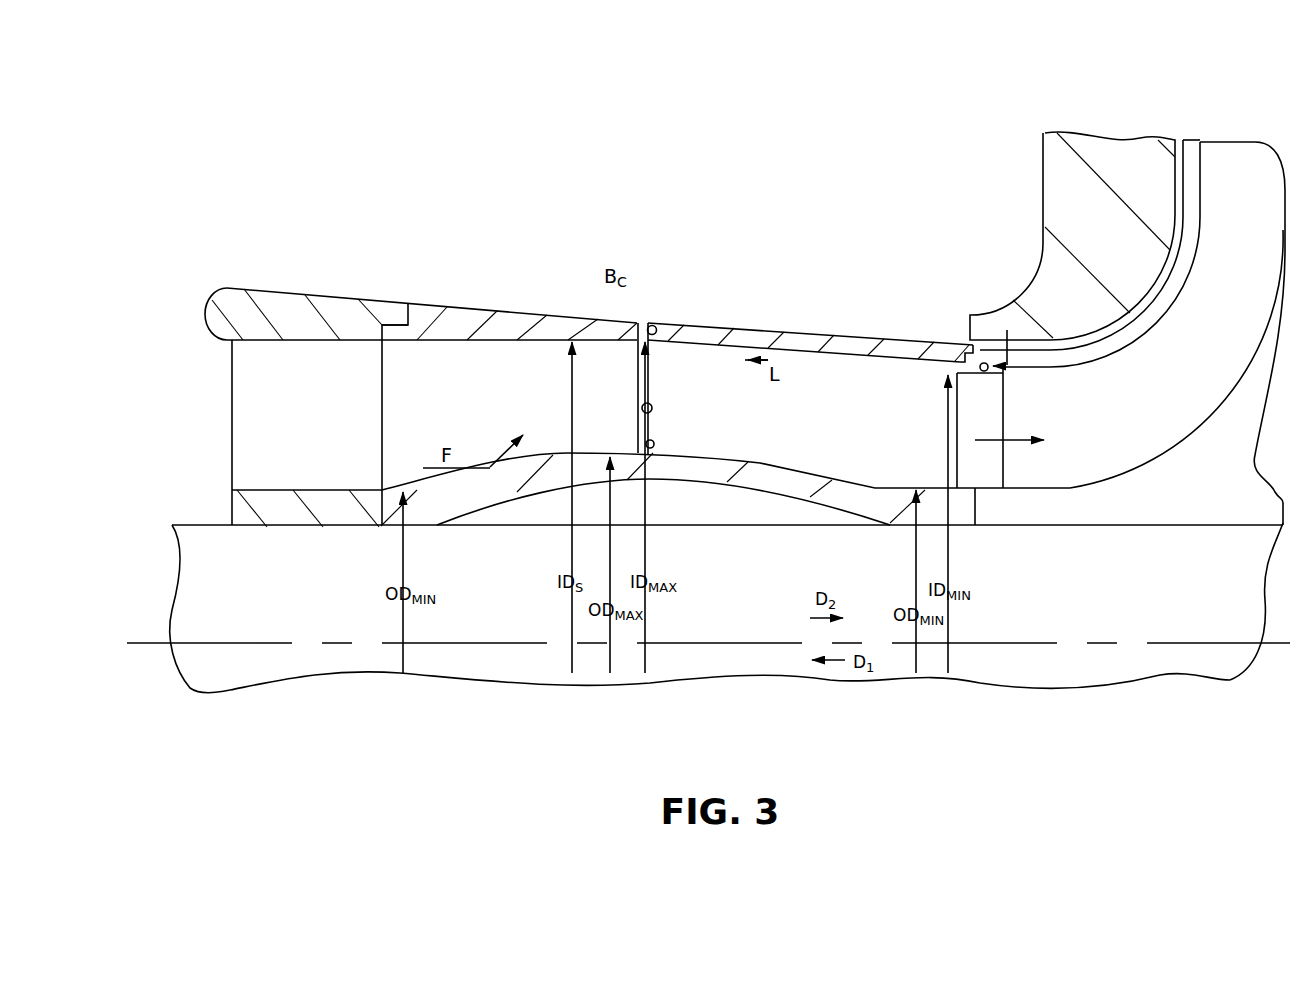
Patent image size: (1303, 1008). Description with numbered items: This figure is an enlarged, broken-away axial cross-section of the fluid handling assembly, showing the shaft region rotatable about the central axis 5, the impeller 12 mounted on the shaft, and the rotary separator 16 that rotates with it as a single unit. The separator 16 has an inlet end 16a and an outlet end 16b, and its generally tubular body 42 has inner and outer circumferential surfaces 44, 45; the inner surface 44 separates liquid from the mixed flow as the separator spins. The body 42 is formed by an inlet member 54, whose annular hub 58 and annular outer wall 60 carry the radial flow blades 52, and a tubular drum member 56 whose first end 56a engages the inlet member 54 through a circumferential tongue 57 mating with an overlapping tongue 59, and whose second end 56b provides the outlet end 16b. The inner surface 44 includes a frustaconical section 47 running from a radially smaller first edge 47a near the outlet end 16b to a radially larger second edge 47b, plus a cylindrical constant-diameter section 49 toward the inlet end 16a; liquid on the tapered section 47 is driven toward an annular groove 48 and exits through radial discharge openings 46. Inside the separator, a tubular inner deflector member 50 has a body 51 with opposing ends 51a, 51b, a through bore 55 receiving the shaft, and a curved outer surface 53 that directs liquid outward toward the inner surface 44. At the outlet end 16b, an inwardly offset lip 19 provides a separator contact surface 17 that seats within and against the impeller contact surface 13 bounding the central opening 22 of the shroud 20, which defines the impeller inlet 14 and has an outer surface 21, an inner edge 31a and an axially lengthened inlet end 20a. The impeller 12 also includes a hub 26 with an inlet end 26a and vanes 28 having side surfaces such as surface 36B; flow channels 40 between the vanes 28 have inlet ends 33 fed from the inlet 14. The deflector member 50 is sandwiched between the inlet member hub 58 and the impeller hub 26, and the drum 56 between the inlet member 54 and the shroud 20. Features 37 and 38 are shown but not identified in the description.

The central axis 5 is at (337, 645).
The impeller 12 is at (1039, 598).
The impeller contact surface 13 is at (989, 376).
The impeller inlet 14 is at (987, 463).
The rotary separator 16 is at (552, 345).
The separator inlet end 16a is at (212, 298).
The separator outlet end 16b is at (965, 348).
The separator contact surface 17 is at (1004, 461).
The lip 19 is at (1000, 416).
The shroud 20 is at (1075, 248).
The shroud inlet end 20a is at (1068, 355).
The shroud outer surface 21 is at (1183, 188).
The central opening 22 is at (992, 430).
The hub 26 is at (1044, 538).
The hub inlet end 26a is at (985, 517).
The vanes 28 is at (1144, 429).
The shroud inner edge 31a is at (965, 390).
The flow channel inlet end 33 is at (1017, 448).
The vane side surface 36B is at (1132, 309).
The housing wall 37 is at (1184, 298).
The housing inner surface 38 is at (1213, 413).
The flow channels 40 is at (1233, 200).
The tubular body 42 is at (669, 336).
The inner circumferential surface 44 is at (823, 357).
The outer circumferential surface 45 is at (835, 335).
The discharge openings 46 is at (650, 325).
The frustaconical section 47 is at (883, 447).
The first circumferential edge 47a is at (957, 473).
The second circumferential edge 47b is at (654, 450).
The annular groove 48 is at (652, 385).
The cylindrical surface section 49 is at (492, 394).
The inner deflector member 50 is at (834, 473).
The deflector tubular body 51 is at (712, 429).
The deflector body first end 51a is at (380, 503).
The deflector body second end 51b is at (977, 505).
The flow blades 52 is at (262, 412).
The curved outer circumferential surface 53 is at (735, 463).
The inlet member 54 is at (384, 364).
The through bore 55 is at (708, 512).
The tubular drum member 56 is at (778, 334).
The drum first end 56a is at (390, 333).
The drum second end 56b is at (955, 364).
The circumferential tongue 57 is at (393, 330).
The annular hub 58 is at (243, 513).
The inlet member tongue 59 is at (398, 312).
The annular outer wall 60 is at (335, 318).